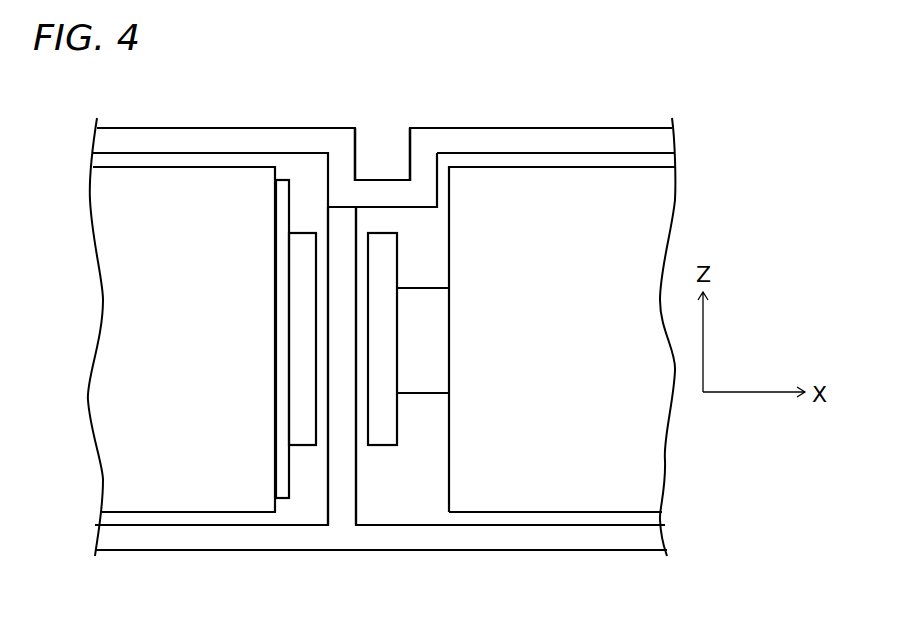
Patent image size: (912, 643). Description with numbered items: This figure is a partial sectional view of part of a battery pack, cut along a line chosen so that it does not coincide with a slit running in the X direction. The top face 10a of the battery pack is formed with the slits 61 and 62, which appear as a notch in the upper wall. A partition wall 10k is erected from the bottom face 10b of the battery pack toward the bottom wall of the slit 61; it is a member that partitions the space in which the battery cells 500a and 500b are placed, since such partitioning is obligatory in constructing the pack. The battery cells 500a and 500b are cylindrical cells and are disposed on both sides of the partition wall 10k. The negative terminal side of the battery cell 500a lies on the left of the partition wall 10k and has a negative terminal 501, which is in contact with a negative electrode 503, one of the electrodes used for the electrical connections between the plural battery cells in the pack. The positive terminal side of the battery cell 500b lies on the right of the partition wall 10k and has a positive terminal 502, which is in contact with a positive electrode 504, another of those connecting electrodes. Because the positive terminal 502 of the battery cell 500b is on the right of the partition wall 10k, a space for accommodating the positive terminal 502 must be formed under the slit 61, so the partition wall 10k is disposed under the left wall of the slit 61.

The top face 10a is at (546, 142).
The bottom face 10b is at (402, 545).
The partition wall 10k is at (342, 508).
The slit 61 is at (383, 162).
The slit 62 is at (382, 154).
The battery cell 500a is at (157, 503).
The battery cell 500b is at (593, 503).
The negative terminal 501 is at (281, 340).
The positive terminal 502 is at (403, 340).
The negative electrode 503 is at (303, 248).
The positive electrode 504 is at (382, 248).